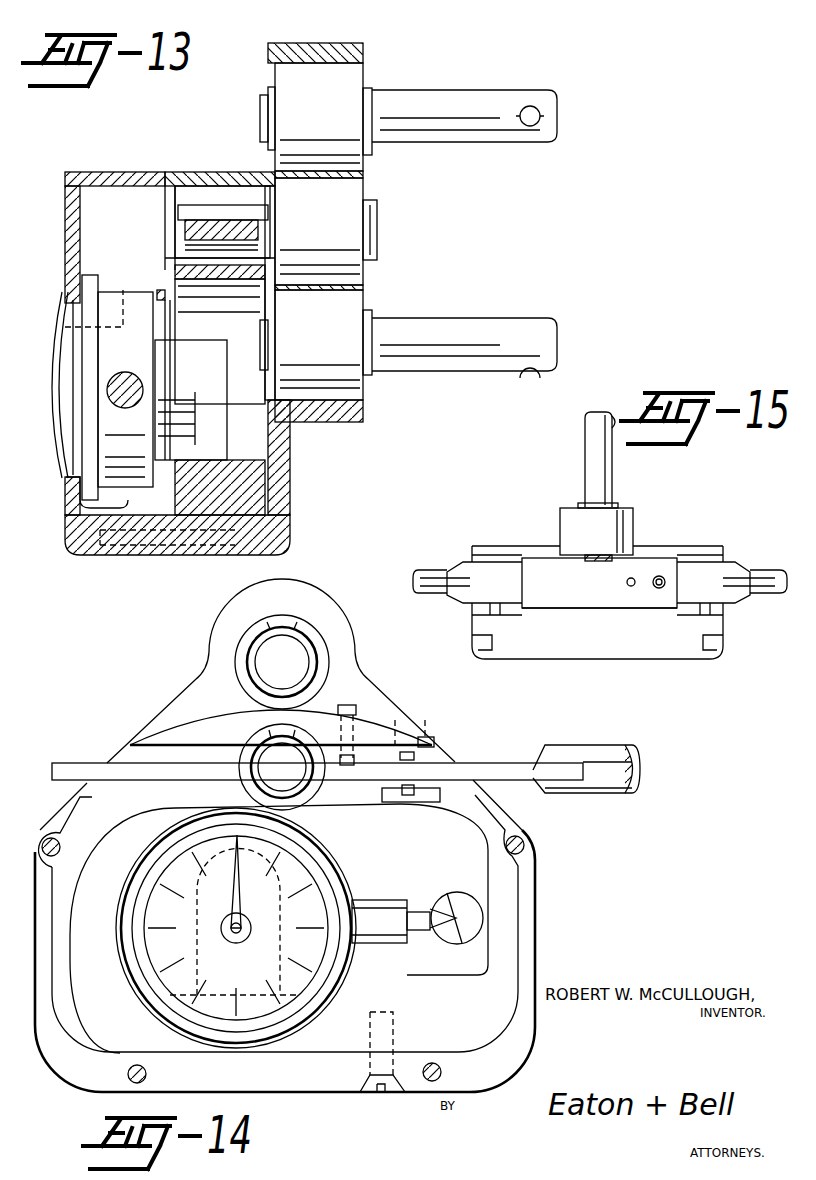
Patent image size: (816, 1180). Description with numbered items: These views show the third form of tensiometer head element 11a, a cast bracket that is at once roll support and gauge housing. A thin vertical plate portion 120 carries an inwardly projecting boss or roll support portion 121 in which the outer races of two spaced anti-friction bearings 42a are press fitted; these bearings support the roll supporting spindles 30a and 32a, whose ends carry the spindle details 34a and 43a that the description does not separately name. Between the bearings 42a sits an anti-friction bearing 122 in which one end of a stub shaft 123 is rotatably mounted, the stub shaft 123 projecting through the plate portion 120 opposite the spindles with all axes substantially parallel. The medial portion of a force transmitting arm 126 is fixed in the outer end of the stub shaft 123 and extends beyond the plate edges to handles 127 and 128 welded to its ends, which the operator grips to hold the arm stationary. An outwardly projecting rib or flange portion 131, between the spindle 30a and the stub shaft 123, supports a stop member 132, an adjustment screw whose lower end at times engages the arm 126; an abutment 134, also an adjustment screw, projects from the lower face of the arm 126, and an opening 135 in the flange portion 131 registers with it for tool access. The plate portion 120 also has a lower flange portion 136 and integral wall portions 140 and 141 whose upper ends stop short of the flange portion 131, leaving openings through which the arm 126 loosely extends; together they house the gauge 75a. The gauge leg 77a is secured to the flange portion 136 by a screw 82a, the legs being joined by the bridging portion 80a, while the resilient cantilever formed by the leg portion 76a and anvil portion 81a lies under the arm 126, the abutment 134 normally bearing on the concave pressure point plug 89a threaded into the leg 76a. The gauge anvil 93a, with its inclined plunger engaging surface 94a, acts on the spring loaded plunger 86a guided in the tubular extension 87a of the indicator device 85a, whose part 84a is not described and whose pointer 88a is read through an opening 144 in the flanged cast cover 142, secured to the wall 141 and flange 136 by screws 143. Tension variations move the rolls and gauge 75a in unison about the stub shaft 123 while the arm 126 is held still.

In FIG. 13, the head element 11a is at (330, 38).
In FIG. 15, the head element 11a is at (703, 539).
In FIG. 14, the head element 11a is at (188, 682).
In FIG. 13, the roll supporting spindle 30a is at (450, 90).
In FIG. 15, the roll supporting spindle 30a is at (585, 440).
In FIG. 14, the roll supporting spindle 30a is at (284, 640).
In FIG. 13, the roll supporting spindle 32a is at (452, 318).
In FIG. 13, the cross hole / pin 34a is at (520, 110).
In FIG. 15, the cross hole / pin 34a is at (614, 418).
In FIG. 13, the anti-friction bearings 42a is at (363, 80).
In FIG. 14, the anti-friction bearings 42a is at (238, 650).
In FIG. 13, the snap ring 43a is at (262, 100).
In FIG. 15, the snap ring 43a is at (588, 503).
In FIG. 14, the snap ring 43a is at (310, 655).
In FIG. 13, the gauge member 75a is at (268, 266).
In FIG. 14, the gauge member 75a is at (118, 832).
In FIG. 13, the leg portion 76a is at (192, 292).
In FIG. 14, the leg portion 76a is at (306, 814).
In FIG. 13, the leg portion 77a is at (176, 490).
In FIG. 14, the leg portion 77a is at (336, 992).
In FIG. 14, the bridging portion 80a is at (80, 978).
In FIG. 14, the anvil portion 81a is at (482, 862).
In FIG. 14, the screw 82a is at (396, 1025).
In FIG. 13, the movement frame 84a is at (222, 440).
In FIG. 14, the movement frame 84a is at (280, 930).
In FIG. 13, the indicator device 85a is at (52, 345).
In FIG. 14, the indicator device 85a is at (332, 872).
In FIG. 14, the spring loaded plunger 86a is at (418, 912).
In FIG. 13, the tubular extension 87a is at (116, 372).
In FIG. 14, the tubular extension 87a is at (382, 901).
In FIG. 14, the pointer 88a is at (240, 868).
In FIG. 14, the pressure point plug 89a is at (412, 802).
In FIG. 14, the gauge anvil 93a is at (460, 900).
In FIG. 14, the plunger engaging surface 94a is at (448, 944).
In FIG. 13, the plate portion 120 is at (290, 474).
In FIG. 15, the plate portion 120 is at (514, 550).
In FIG. 14, the plate portion 120 is at (386, 714).
In FIG. 13, the boss or roll support portion 121 is at (363, 52).
In FIG. 15, the boss or roll support portion 121 is at (635, 524).
In FIG. 13, the anti-friction bearing 122 is at (363, 192).
In FIG. 14, the anti-friction bearing 122 is at (310, 746).
In FIG. 13, the stub shaft 123 is at (200, 178).
In FIG. 14, the stub shaft 123 is at (258, 748).
In FIG. 13, the force transmitting arm 126 is at (215, 225).
In FIG. 15, the force transmitting arm 126 is at (712, 568).
In FIG. 14, the force transmitting arm 126 is at (480, 762).
In FIG. 15, the handle 127 is at (762, 578).
In FIG. 14, the handle 127 is at (600, 745).
In FIG. 15, the handle 128 is at (425, 575).
In FIG. 13, the rib or flange portion 131 is at (180, 172).
In FIG. 15, the rib or flange portion 131 is at (553, 608).
In FIG. 14, the rib or flange portion 131 is at (192, 732).
In FIG. 15, the stop member 132 is at (628, 586).
In FIG. 14, the stop member 132 is at (346, 705).
In FIG. 15, the abutment 134 is at (660, 588).
In FIG. 14, the abutment 134 is at (398, 760).
In FIG. 15, the opening 135 is at (662, 567).
In FIG. 14, the opening 135 is at (428, 736).
In FIG. 13, the flange portion 136 is at (232, 552).
In FIG. 14, the flange portion 136 is at (290, 1088).
In FIG. 13, the wall portion 140 is at (168, 260).
In FIG. 15, the wall portion 140 is at (490, 610).
In FIG. 14, the wall portion 140 is at (56, 940).
In FIG. 15, the wall portion 141 is at (708, 610).
In FIG. 14, the wall portion 141 is at (535, 916).
In FIG. 13, the flanged cover 142 is at (112, 172).
In FIG. 15, the flanged cover 142 is at (610, 652).
In FIG. 13, the screws 143 is at (158, 290).
In FIG. 15, the screws 143 is at (478, 650).
In FIG. 14, the screws 143 is at (42, 840).
In FIG. 13, the opening 144 is at (66, 480).